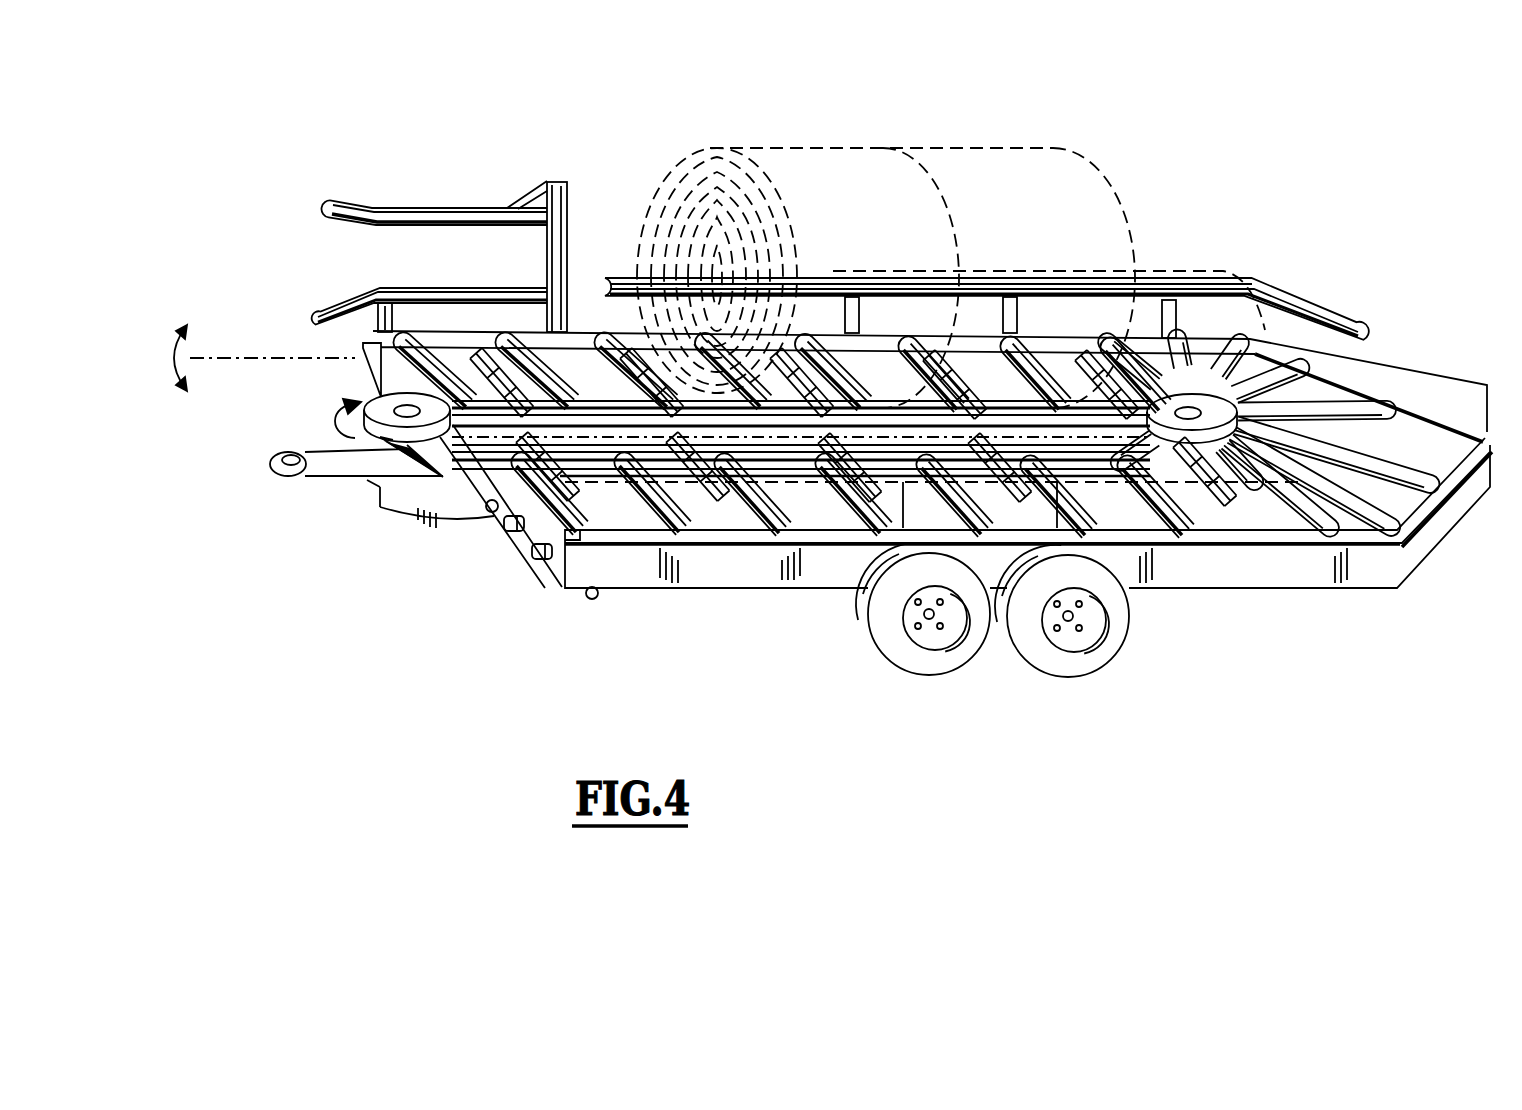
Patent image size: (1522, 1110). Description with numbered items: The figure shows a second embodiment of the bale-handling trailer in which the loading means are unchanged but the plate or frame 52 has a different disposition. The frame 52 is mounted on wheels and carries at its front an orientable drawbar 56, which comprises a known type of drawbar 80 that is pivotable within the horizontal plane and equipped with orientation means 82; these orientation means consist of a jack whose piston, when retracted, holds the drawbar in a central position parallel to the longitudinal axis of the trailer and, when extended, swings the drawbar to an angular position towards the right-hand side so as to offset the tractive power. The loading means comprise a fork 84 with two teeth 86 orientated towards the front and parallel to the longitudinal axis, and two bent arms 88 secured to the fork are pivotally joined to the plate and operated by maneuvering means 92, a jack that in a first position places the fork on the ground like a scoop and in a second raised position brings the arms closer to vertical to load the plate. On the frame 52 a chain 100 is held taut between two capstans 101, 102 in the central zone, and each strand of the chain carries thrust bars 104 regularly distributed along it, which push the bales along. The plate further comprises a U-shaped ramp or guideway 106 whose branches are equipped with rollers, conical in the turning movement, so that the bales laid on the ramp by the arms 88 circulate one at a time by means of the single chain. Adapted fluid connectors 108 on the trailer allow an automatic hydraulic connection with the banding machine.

The frame 52 is at (750, 568).
The orientable drawbar 56 is at (394, 528).
The drawbar 80 is at (455, 500).
The orientation means 82 is at (590, 600).
The fork 84 is at (411, 190).
The teeth 86 is at (343, 222).
The bent arms 88 is at (560, 182).
The maneuvering means 92 is at (580, 330).
The chain 100 is at (390, 440).
The capstan 101 is at (372, 398).
The capstan 102 is at (1320, 383).
The thrust bars 104 is at (580, 476).
The U-shaped ramp or guideway 106 is at (1386, 497).
The fluid connectors 108 is at (541, 560).